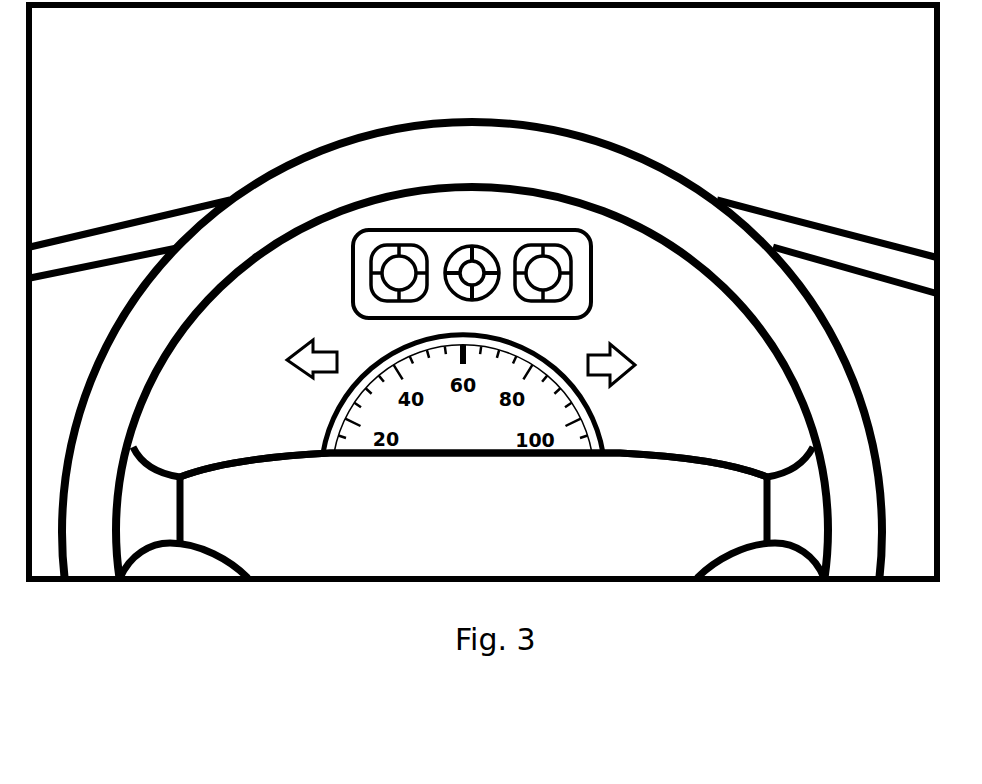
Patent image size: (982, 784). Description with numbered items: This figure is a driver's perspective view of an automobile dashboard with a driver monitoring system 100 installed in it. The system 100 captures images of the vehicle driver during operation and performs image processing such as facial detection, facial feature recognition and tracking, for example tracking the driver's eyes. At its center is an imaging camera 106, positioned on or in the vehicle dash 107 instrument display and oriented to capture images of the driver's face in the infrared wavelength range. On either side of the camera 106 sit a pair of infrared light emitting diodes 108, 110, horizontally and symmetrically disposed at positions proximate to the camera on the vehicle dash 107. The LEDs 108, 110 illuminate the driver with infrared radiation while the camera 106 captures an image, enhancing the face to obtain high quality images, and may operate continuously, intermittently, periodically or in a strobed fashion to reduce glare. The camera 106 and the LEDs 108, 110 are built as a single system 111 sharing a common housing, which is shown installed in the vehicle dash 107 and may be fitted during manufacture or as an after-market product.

The driver monitoring system 100 is at (558, 174).
The imaging camera 106 is at (472, 235).
The vehicle dash 107 is at (305, 285).
The light emitting diode 108 is at (400, 231).
The light emitting diode 110 is at (544, 231).
The single system 111 is at (597, 277).